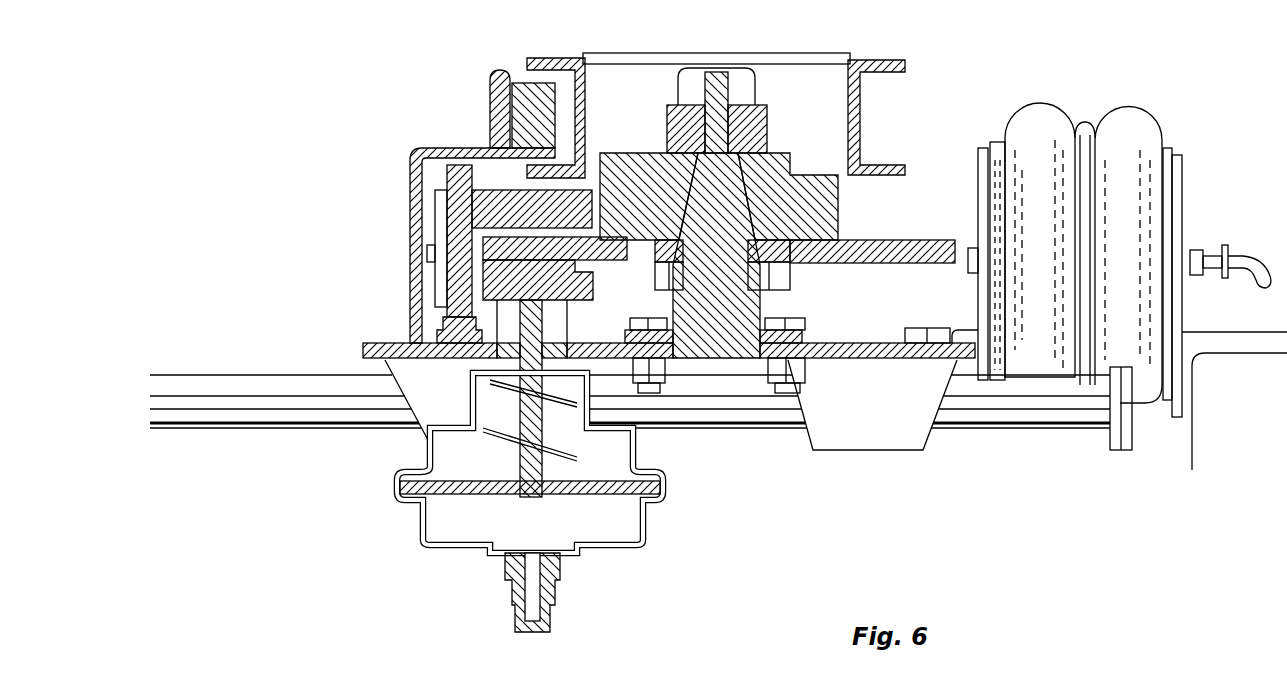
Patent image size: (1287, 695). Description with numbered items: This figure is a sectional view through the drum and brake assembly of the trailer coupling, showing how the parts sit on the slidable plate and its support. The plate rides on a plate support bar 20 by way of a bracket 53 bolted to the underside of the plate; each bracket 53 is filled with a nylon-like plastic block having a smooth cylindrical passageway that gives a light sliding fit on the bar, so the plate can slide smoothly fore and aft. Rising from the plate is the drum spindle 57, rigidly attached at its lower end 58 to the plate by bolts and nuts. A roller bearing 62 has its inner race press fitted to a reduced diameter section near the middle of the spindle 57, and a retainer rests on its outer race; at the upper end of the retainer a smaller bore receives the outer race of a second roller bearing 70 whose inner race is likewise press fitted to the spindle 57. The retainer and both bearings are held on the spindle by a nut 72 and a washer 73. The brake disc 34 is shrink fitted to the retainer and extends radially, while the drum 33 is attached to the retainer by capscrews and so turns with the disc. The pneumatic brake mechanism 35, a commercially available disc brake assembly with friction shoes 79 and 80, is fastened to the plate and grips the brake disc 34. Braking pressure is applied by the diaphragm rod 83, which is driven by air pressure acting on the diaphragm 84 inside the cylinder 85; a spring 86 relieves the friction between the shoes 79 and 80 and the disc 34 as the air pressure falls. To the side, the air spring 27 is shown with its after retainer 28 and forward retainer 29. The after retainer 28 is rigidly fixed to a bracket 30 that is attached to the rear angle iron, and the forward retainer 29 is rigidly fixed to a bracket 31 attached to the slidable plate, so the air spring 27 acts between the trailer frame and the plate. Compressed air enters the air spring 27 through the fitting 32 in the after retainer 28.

The plate support bar 20 is at (310, 386).
The air spring 27 is at (1044, 113).
The after retainer 28 is at (1170, 148).
The forward retainer 29 is at (1000, 143).
The bracket 30 is at (1183, 162).
The bracket 31 is at (985, 156).
The fitting 32 is at (1255, 258).
The drum 33 is at (822, 57).
The brake disc 34 is at (899, 240).
The pneumatic brake mechanism 35 is at (437, 193).
The bracket 53 is at (422, 410).
The drum spindle 57 is at (779, 296).
The lower end 58 is at (802, 334).
The roller bearing 62 is at (790, 228).
The roller bearing 70 is at (667, 108).
The nut 72 is at (697, 96).
The washer 73 is at (745, 105).
The friction shoe 79 is at (587, 203).
The friction shoe 80 is at (580, 266).
The diaphragm rod 83 is at (539, 414).
The diaphragm 84 is at (490, 497).
The cylinder 85 is at (452, 523).
The spring 86 is at (505, 432).